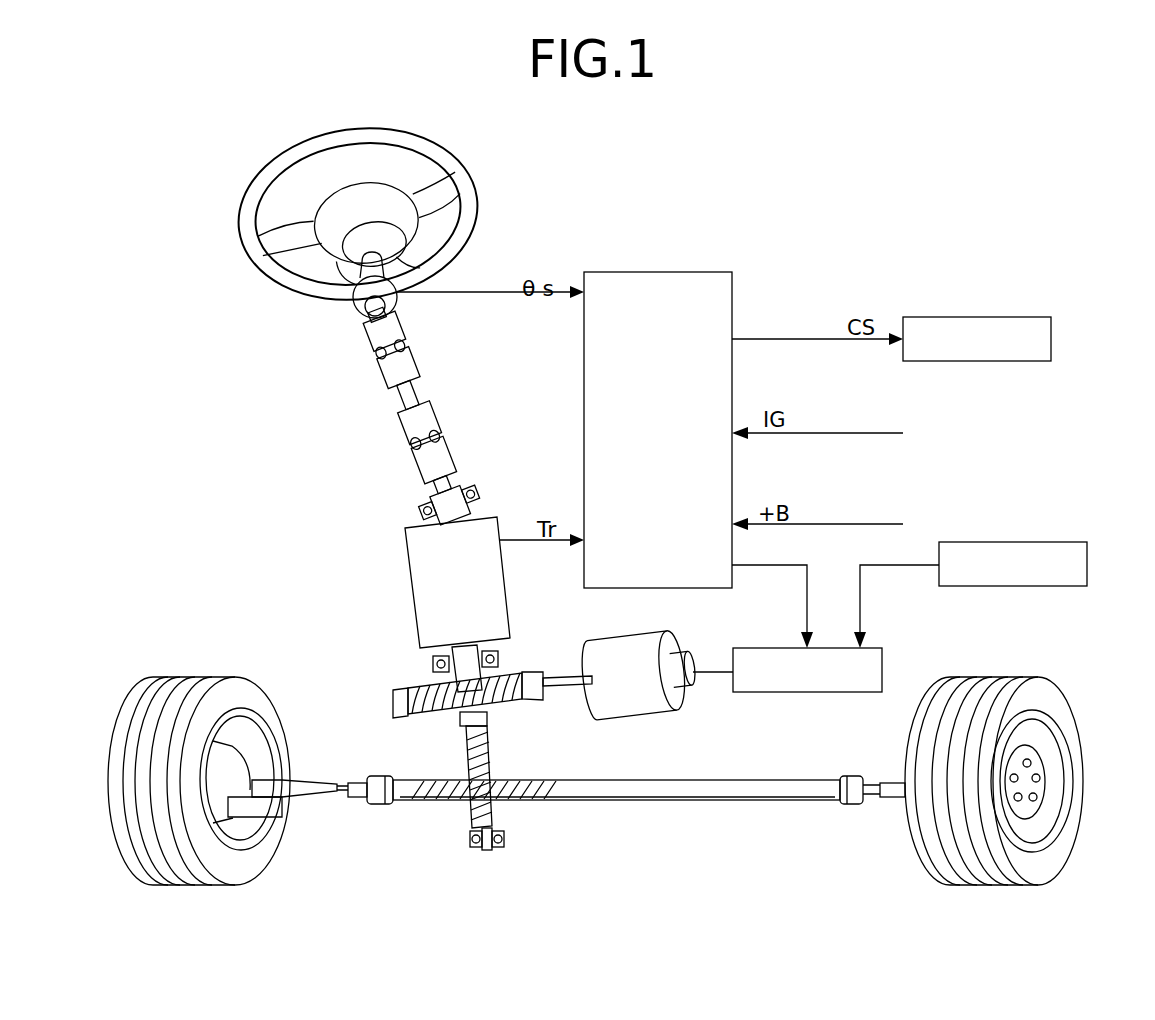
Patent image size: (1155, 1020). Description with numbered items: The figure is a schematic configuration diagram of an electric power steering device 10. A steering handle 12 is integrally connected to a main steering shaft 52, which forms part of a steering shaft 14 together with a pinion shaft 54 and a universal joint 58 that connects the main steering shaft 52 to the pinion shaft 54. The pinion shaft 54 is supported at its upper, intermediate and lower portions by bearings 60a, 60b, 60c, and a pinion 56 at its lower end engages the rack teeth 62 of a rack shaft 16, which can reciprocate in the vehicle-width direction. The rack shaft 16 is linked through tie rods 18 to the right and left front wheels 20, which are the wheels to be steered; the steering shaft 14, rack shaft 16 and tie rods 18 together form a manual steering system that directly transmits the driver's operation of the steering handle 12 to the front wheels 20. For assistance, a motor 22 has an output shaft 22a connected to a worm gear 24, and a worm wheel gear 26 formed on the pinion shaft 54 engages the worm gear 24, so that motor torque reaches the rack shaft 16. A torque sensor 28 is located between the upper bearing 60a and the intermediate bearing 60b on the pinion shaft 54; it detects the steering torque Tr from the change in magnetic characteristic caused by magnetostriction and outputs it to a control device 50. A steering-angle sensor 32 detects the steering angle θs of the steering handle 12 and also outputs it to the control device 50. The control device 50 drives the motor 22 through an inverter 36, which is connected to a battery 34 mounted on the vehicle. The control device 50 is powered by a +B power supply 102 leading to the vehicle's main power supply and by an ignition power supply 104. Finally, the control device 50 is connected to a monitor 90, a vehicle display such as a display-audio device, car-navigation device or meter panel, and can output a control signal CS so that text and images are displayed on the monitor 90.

The power steering device 10 is at (168, 337).
The steering handle 12 is at (473, 202).
The steering shaft 14 is at (357, 448).
The rack shaft 16 is at (695, 800).
The tie rods 18 is at (313, 797).
The front wheels 20 is at (220, 677).
The motor 22 is at (652, 707).
The output shaft 22a is at (565, 686).
The worm gear 24 is at (508, 705).
The worm wheel gear 26 is at (395, 712).
The torque sensor 28 is at (410, 599).
The steering-angle sensor 32 is at (355, 290).
The battery 34 is at (1033, 542).
The inverter 36 is at (755, 648).
The control device 50 is at (652, 271).
The main steering shaft 52 is at (395, 305).
The pinion shaft 54 is at (458, 517).
The pinion 56 is at (490, 764).
The universal joint 58 is at (390, 383).
The bearing 60a is at (420, 507).
The bearing 60b is at (433, 663).
The bearing 60c is at (470, 839).
The rack teeth 62 is at (550, 800).
The monitor 90 is at (1052, 345).
The +B power supply 102 is at (821, 524).
The ignition power supply 104 is at (815, 433).